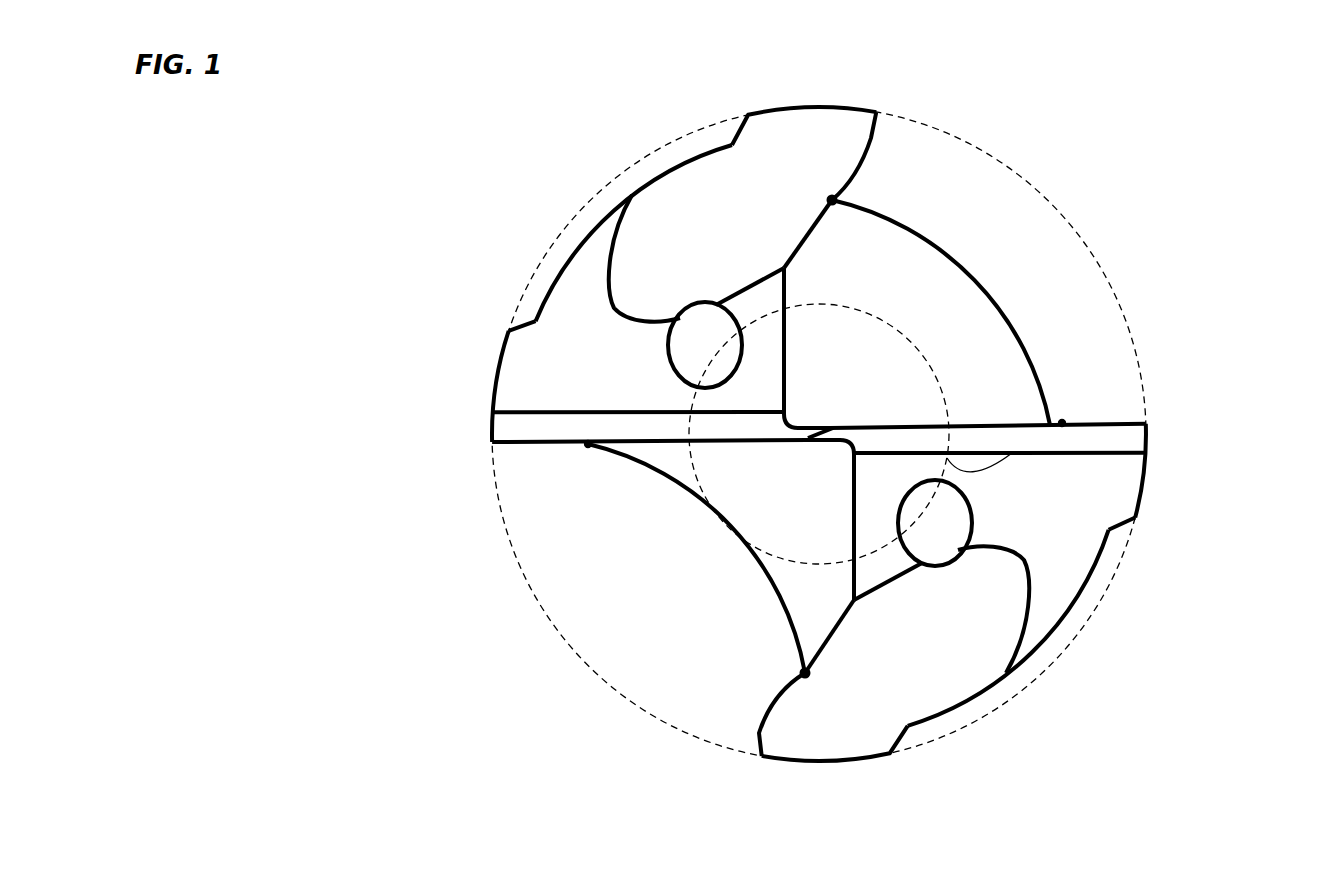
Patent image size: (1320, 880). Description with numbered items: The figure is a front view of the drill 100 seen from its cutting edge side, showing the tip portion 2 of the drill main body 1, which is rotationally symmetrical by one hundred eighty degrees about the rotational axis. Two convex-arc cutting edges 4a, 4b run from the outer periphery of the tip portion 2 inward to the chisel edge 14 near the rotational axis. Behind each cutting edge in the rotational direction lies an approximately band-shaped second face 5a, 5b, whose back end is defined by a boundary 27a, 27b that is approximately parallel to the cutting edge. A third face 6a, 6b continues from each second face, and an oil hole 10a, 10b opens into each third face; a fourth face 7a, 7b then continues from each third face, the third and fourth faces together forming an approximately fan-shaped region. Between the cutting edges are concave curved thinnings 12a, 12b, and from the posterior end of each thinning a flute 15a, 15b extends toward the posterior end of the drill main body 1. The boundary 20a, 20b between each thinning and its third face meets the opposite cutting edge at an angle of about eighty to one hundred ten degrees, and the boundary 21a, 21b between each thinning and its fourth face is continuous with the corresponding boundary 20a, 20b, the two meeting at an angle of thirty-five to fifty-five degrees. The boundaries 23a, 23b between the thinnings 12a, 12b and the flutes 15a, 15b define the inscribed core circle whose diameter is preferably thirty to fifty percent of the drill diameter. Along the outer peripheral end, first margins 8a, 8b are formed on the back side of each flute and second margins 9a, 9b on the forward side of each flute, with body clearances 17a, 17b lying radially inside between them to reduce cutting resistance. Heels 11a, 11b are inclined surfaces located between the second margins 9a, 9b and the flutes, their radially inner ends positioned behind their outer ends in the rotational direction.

The drill 100 is at (1178, 115).
The drill main body 1 is at (1235, 82).
The tip portion 2 is at (1123, 235).
The convex-arc cutting edge 4a is at (571, 446).
The convex-arc cutting edge 4b is at (1033, 428).
The second face 5a is at (513, 428).
The second face 5b is at (1127, 438).
The third face 6a is at (513, 327).
The third face 6b is at (1077, 517).
The fourth face 7a is at (692, 180).
The fourth face 7b is at (947, 668).
The first margin 8a is at (495, 388).
The first margin 8b is at (1145, 477).
The second margin 9a is at (793, 108).
The second margin 9b is at (845, 762).
The oil hole 10a is at (700, 338).
The oil hole 10b is at (942, 525).
The heel 11a is at (876, 124).
The heel 11b is at (755, 737).
The thinning 12a is at (870, 357).
The thinning 12b is at (793, 508).
The chisel edge 14 is at (907, 428).
The flute 15a is at (1003, 428).
The flute 15b is at (635, 468).
The body clearance 17a is at (612, 212).
The body clearance 17b is at (1022, 658).
The boundary 20a is at (786, 337).
The boundary 20b is at (853, 529).
The boundary 21a is at (810, 228).
The boundary 21b is at (828, 640).
The boundary 23a is at (1053, 332).
The boundary 23b is at (587, 545).
The boundary 27a is at (637, 412).
The boundary 27b is at (1057, 457).